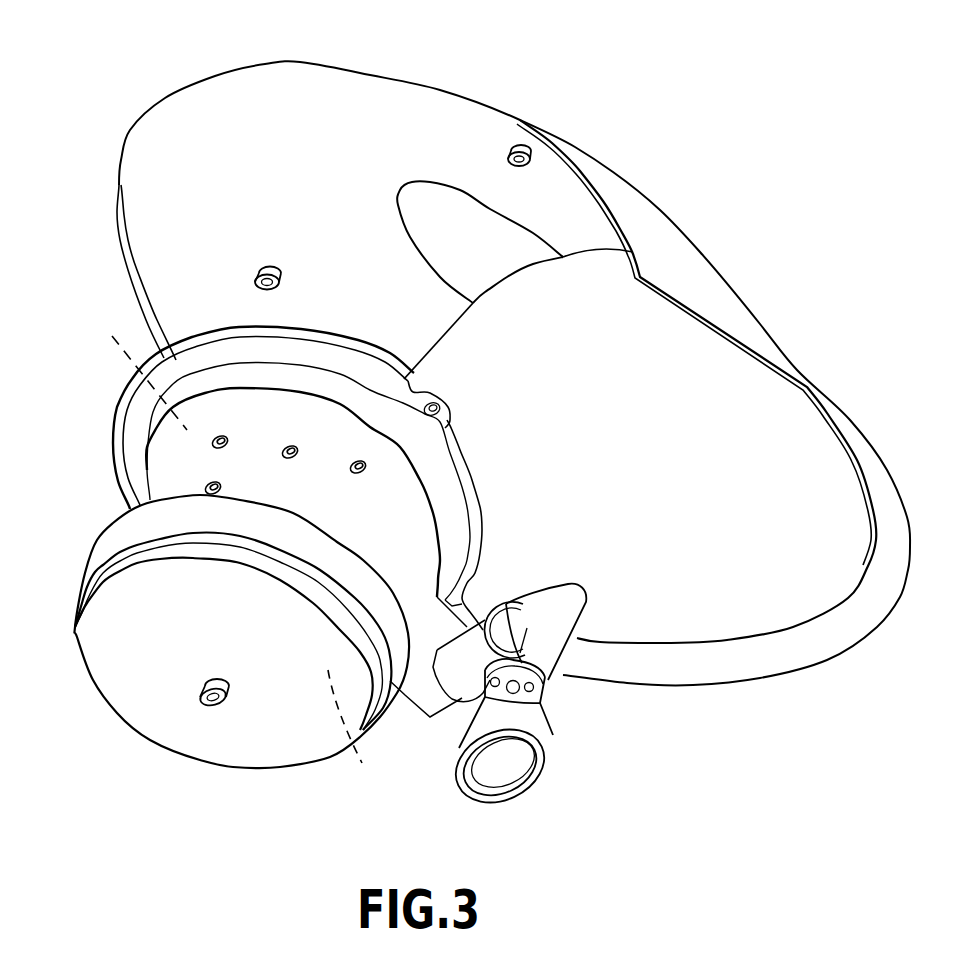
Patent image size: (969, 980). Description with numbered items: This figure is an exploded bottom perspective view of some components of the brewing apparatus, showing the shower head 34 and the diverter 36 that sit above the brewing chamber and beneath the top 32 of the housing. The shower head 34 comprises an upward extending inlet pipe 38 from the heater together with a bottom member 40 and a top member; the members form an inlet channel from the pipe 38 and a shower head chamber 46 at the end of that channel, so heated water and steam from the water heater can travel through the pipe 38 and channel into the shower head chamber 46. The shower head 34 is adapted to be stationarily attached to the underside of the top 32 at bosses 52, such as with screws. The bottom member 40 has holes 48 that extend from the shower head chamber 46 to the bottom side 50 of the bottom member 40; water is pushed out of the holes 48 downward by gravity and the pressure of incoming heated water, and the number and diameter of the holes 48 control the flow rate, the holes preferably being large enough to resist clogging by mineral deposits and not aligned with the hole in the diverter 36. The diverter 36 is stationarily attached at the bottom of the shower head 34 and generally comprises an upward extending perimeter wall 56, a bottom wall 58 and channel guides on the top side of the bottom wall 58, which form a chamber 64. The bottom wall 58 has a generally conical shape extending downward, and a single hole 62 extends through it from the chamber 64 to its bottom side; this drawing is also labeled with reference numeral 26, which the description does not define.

The lamp assembly 26 is at (796, 416).
The top 32 is at (442, 90).
The shower head 34 is at (130, 401).
The diverter 36 is at (76, 632).
The inlet pipe 38 is at (553, 688).
The bottom member 40 is at (150, 451).
The shower head chamber 46 is at (129, 371).
The holes 48 is at (357, 460).
The bottom side 50 is at (418, 513).
The bosses 52 is at (521, 145).
The perimeter wall 56 is at (114, 527).
The bottom wall 58 is at (270, 753).
The hole 62 is at (204, 704).
The chamber 64 is at (361, 729).